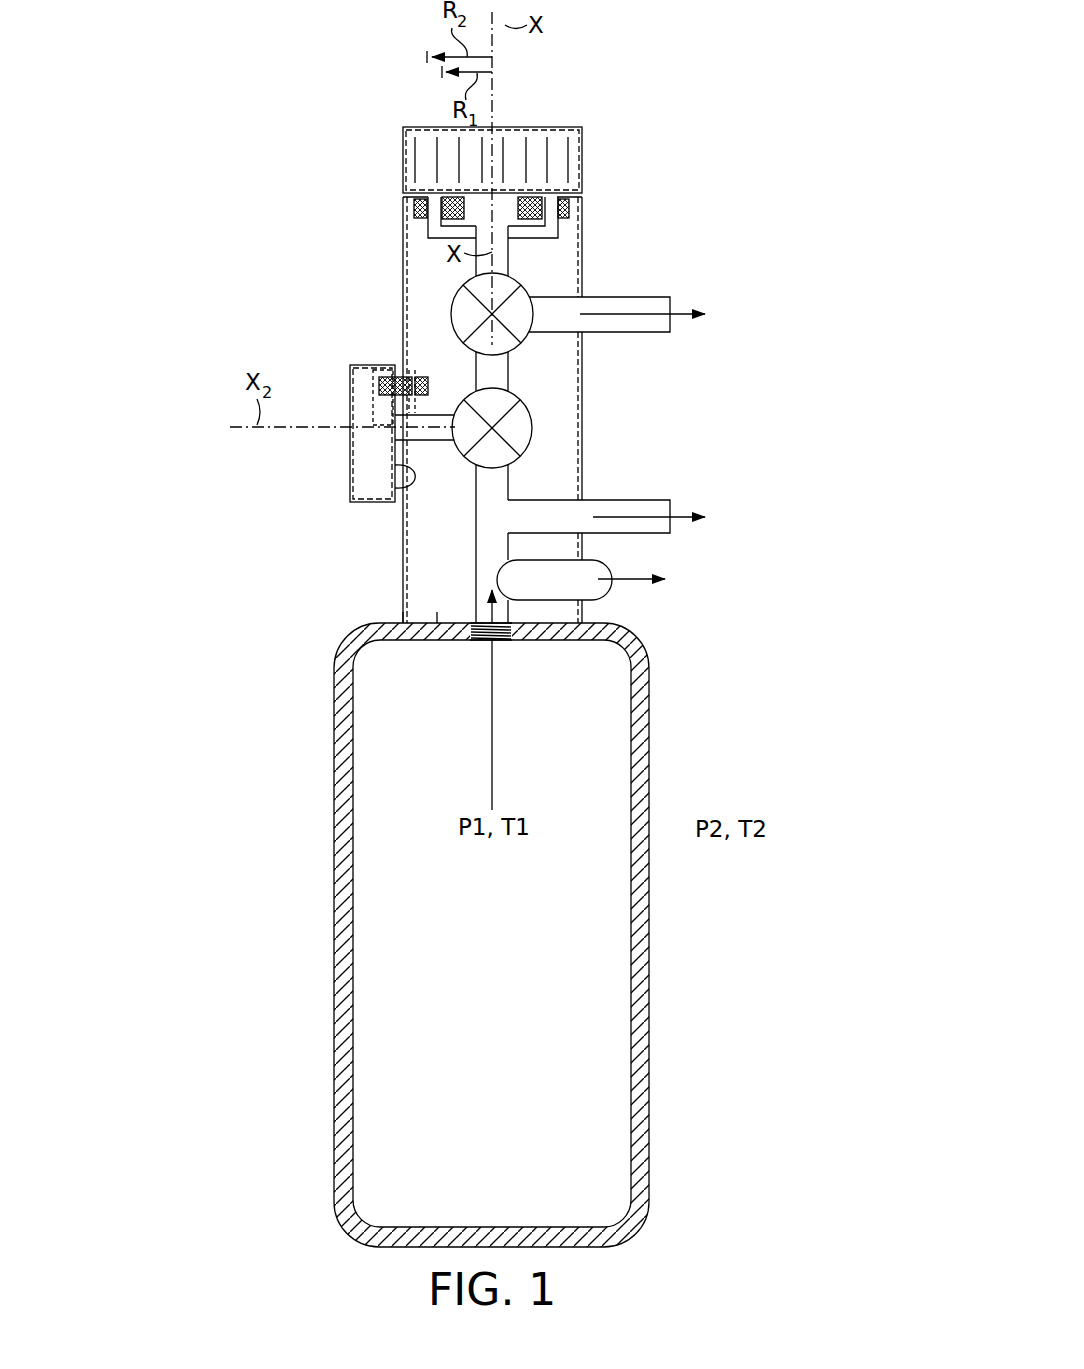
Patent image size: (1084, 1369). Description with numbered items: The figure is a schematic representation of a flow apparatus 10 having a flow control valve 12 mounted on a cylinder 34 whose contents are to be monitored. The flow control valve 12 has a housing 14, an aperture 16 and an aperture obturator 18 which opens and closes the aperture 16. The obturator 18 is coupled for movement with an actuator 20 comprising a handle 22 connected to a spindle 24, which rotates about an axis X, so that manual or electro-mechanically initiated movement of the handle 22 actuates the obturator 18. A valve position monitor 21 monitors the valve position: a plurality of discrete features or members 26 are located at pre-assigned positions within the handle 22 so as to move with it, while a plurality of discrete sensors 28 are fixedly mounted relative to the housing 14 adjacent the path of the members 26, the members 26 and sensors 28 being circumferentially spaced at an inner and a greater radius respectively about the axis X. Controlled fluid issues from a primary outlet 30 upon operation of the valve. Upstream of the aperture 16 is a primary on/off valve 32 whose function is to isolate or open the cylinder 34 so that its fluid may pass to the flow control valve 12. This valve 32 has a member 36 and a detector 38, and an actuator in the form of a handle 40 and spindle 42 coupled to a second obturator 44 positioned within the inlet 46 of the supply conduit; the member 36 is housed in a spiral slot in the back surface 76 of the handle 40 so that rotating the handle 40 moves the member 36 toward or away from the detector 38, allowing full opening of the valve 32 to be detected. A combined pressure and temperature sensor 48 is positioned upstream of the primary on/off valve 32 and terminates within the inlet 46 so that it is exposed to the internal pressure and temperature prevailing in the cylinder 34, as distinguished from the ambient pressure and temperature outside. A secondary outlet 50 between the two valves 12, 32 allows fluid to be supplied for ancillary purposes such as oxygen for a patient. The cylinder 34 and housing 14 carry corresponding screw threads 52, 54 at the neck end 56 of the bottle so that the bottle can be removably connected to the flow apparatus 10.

The flow apparatus 10 is at (318, 183).
The flow control valve 12 is at (403, 283).
The housing 14 is at (568, 458).
The aperture 16 is at (500, 378).
The aperture obturator 18 is at (452, 312).
The actuator 20 is at (515, 127).
The valve position monitor 21 is at (568, 226).
The handle 22 is at (556, 140).
The spindle 24 is at (510, 264).
The discrete features 26 is at (450, 224).
The discrete sensors 28 is at (410, 207).
The primary outlet 30 is at (652, 325).
The primary on/off valve 32 is at (340, 505).
The cylinder 34 is at (645, 745).
The member 36 is at (390, 376).
The detector 38 is at (424, 376).
The handle 40 is at (367, 378).
The spindle 42 is at (437, 440).
The second obturator 44 is at (533, 427).
The inlet 46 is at (483, 565).
The combined pressure and temperature sensor 48 is at (610, 588).
The secondary outlet 50 is at (654, 498).
The screw thread 52 is at (469, 640).
The screw thread 54 is at (519, 637).
The neck end 56 is at (437, 622).
The back surface 76 is at (393, 485).